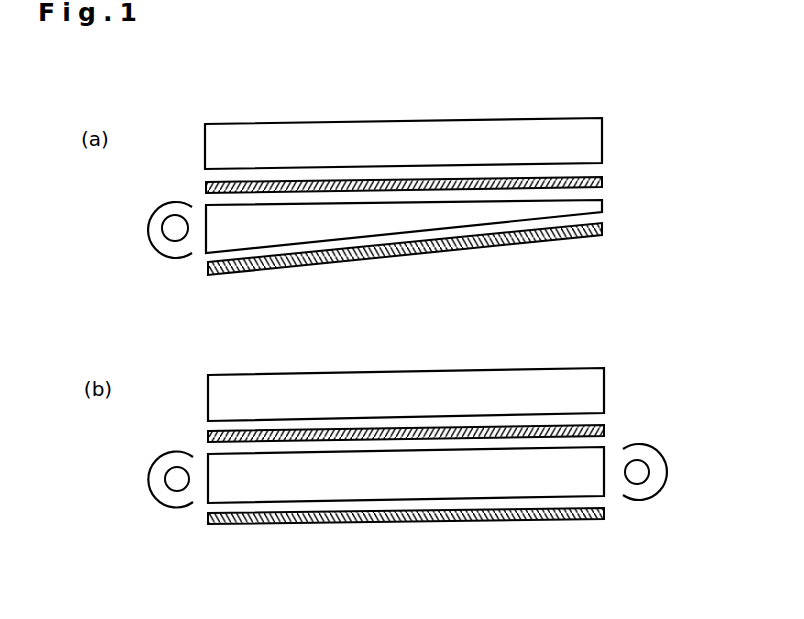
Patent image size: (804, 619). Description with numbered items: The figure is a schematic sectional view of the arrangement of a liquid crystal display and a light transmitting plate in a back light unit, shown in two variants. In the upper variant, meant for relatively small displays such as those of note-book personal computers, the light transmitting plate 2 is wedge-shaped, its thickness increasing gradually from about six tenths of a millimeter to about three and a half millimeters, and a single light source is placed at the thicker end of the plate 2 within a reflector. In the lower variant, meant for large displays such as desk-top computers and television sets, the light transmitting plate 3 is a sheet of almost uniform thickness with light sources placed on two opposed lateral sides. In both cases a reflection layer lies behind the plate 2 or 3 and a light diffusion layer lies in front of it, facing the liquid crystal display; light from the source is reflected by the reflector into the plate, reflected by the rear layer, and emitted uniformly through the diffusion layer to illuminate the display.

The light transmitting plate 2 is at (442, 226).
The light transmitting plate 3 is at (443, 492).